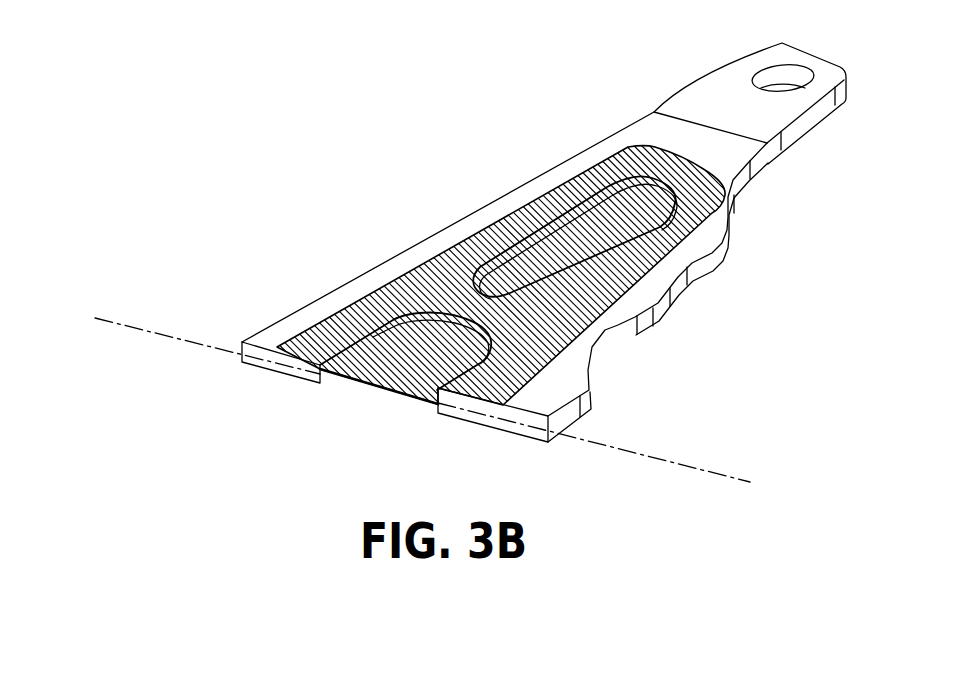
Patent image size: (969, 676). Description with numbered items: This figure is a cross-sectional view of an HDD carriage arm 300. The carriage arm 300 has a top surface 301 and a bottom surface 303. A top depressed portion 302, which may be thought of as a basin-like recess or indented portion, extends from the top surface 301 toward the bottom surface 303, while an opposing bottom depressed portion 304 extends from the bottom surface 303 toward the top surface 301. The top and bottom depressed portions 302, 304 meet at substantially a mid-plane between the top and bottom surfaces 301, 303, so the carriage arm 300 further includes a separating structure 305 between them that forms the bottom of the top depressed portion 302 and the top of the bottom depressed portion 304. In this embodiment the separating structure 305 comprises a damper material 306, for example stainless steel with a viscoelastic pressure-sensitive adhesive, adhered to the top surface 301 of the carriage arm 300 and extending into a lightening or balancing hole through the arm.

The carriage arm 300 is at (213, 202).
The top surface 301 is at (640, 130).
The top depressed portion 302 is at (527, 250).
The bottom surface 303 is at (730, 262).
The bottom depressed portion 304 is at (392, 409).
The separating structure 305 is at (570, 248).
The damper material 306 is at (345, 325).